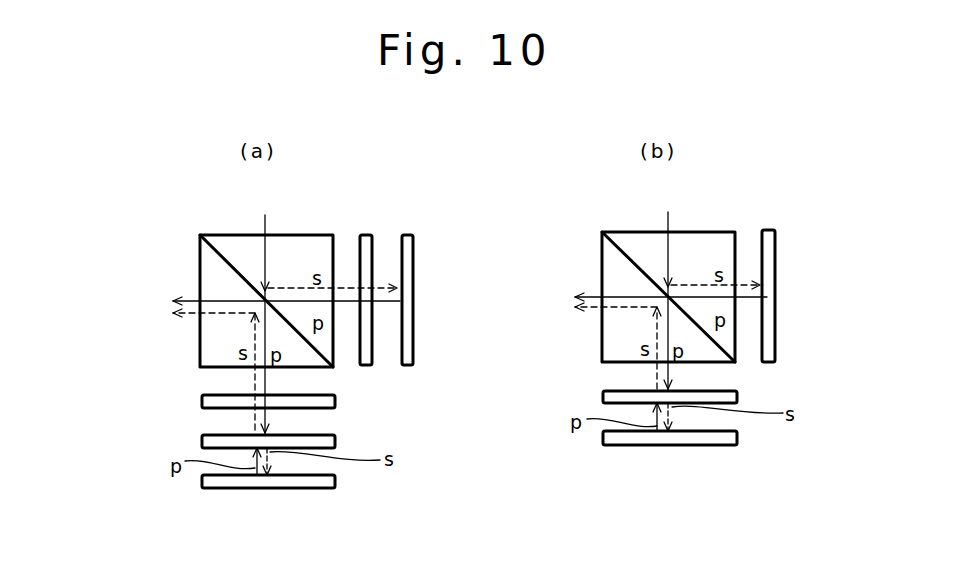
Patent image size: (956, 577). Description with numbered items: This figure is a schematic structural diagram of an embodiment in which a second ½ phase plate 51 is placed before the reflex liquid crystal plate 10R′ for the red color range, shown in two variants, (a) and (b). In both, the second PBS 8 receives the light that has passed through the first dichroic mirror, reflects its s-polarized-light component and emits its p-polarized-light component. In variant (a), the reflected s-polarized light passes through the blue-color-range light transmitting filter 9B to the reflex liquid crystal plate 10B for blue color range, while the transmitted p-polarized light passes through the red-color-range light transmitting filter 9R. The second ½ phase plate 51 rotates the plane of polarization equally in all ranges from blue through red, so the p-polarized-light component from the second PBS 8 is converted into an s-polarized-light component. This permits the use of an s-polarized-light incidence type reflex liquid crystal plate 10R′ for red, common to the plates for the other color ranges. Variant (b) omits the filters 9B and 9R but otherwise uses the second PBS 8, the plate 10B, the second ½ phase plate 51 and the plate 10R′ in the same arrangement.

The second PBS 8 is at (215, 260).
The blue-color-range light transmitting filter 9B is at (366, 237).
The reflex liquid crystal plate for blue color range 10B is at (407, 237).
The red-color-range light transmitting filter 9R is at (335, 401).
The second ½ phase plate 51 is at (335, 441).
The reflex liquid crystal plate for red color range 10R′ is at (335, 480).